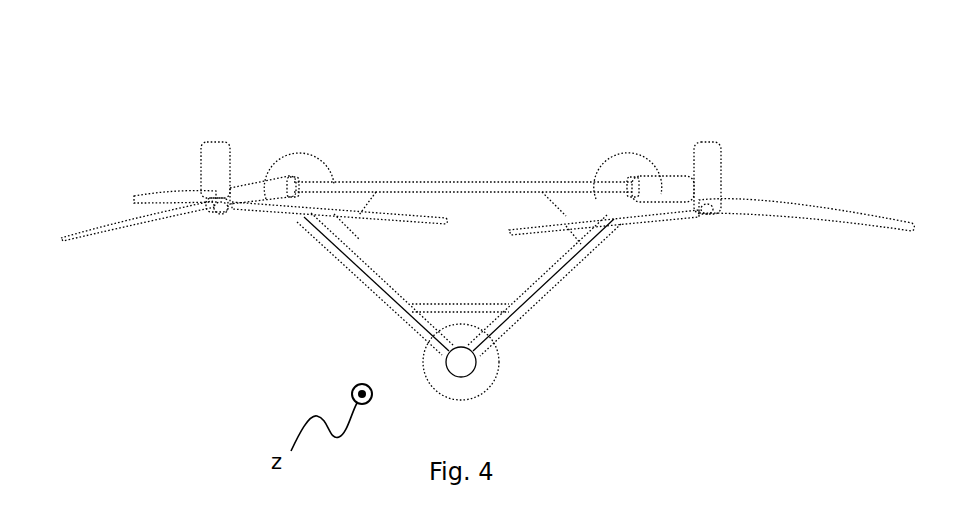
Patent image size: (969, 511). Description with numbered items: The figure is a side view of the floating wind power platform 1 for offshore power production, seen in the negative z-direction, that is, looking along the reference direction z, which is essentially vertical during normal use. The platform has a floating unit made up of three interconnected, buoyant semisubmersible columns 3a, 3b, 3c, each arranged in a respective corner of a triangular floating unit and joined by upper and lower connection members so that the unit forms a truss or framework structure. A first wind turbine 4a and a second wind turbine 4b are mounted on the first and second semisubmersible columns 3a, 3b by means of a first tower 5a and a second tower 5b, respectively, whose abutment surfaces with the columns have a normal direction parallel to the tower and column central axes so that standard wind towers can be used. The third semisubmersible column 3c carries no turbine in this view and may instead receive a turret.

The floating wind power platform 1 is at (143, 90).
The first semisubmersible column 3a is at (303, 130).
The second semisubmersible column 3b is at (636, 130).
The third semisubmersible column 3c is at (470, 363).
The first wind turbine 4a is at (222, 217).
The second wind turbine 4b is at (700, 220).
The first tower 5a is at (246, 146).
The second tower 5b is at (676, 148).